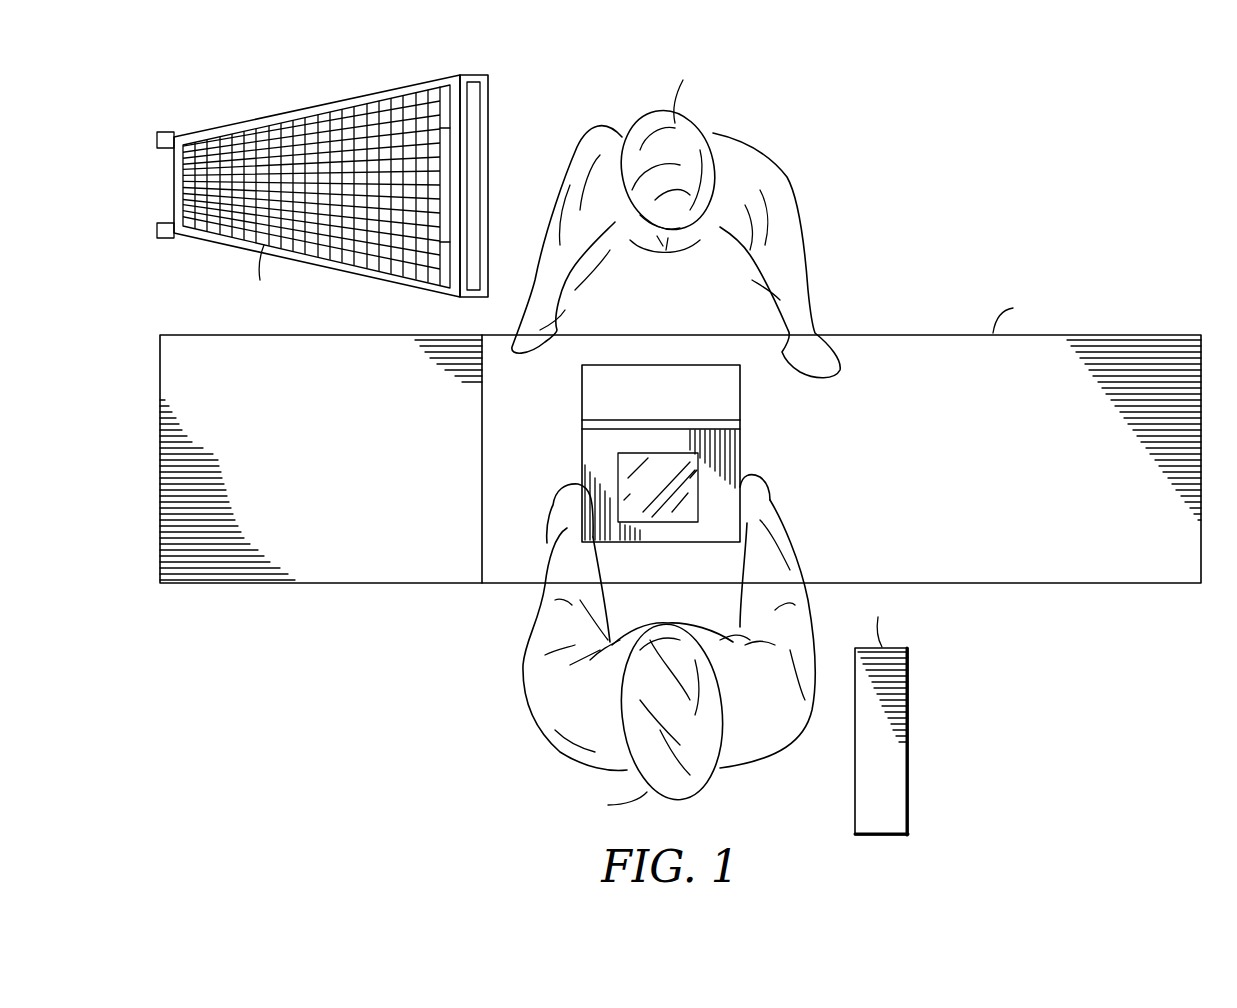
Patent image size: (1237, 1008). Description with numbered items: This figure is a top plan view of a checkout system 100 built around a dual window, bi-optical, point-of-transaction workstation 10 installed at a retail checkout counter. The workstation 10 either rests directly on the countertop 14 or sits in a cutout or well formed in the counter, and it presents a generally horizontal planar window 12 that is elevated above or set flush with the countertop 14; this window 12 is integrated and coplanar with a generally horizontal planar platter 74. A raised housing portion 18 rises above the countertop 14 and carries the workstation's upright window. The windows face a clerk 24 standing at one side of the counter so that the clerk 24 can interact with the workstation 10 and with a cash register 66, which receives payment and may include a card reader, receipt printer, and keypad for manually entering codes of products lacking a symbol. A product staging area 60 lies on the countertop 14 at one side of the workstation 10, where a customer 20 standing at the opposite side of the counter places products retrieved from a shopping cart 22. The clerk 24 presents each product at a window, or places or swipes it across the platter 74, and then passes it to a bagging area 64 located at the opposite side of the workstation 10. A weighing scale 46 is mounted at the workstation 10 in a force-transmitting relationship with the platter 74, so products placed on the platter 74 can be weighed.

The checkout system 100 is at (838, 168).
The point-of-transaction workstation 10 is at (701, 438).
The horizontal planar window 12 is at (657, 505).
The countertop 14 is at (1153, 360).
The raised housing portion 18 is at (723, 363).
The customer 20 is at (733, 152).
The shopping cart 22 is at (319, 204).
The clerk 24 is at (747, 740).
The weighing scale 46 is at (747, 537).
The product staging area 60 is at (980, 530).
The bagging area 64 is at (185, 477).
The cash register 66 is at (912, 763).
The platter 74 is at (593, 448).